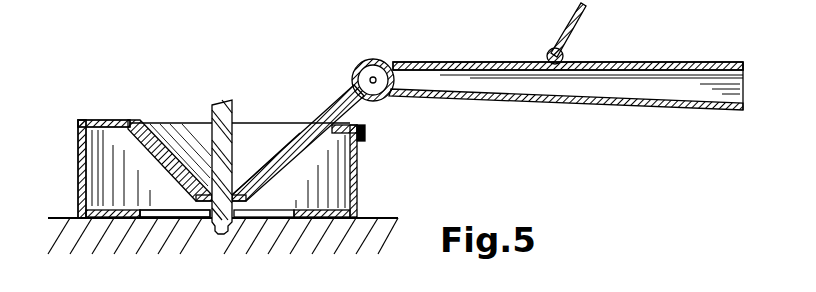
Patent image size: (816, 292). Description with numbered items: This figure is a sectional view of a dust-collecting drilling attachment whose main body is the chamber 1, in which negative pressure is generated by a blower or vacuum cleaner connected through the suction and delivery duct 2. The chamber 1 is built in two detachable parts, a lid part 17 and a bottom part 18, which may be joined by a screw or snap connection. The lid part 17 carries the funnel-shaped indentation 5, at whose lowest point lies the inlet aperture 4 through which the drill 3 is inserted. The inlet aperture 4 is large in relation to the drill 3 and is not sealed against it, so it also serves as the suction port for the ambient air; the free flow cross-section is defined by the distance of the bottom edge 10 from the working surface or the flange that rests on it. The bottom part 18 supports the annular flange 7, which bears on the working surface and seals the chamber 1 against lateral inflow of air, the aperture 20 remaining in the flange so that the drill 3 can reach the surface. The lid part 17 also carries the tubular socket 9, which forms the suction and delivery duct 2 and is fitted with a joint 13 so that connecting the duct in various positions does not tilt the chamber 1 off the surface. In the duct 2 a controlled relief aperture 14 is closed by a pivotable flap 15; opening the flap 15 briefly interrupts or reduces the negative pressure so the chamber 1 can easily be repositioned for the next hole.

The chamber 1 is at (346, 188).
The suction and delivery duct 2 is at (674, 96).
The drill 3 is at (212, 112).
The inlet aperture 4 is at (238, 183).
The funnel-shaped indentation 5 is at (155, 140).
The annular flange 7 is at (117, 218).
The tubular socket 9 is at (322, 122).
The bottom edge 10 is at (208, 218).
The joint 13 is at (380, 60).
The controlled relief aperture 14 is at (490, 62).
The pivotable flap 15 is at (575, 27).
The lid part 17 is at (112, 120).
The bottom part 18 is at (78, 172).
The aperture 20 is at (284, 218).